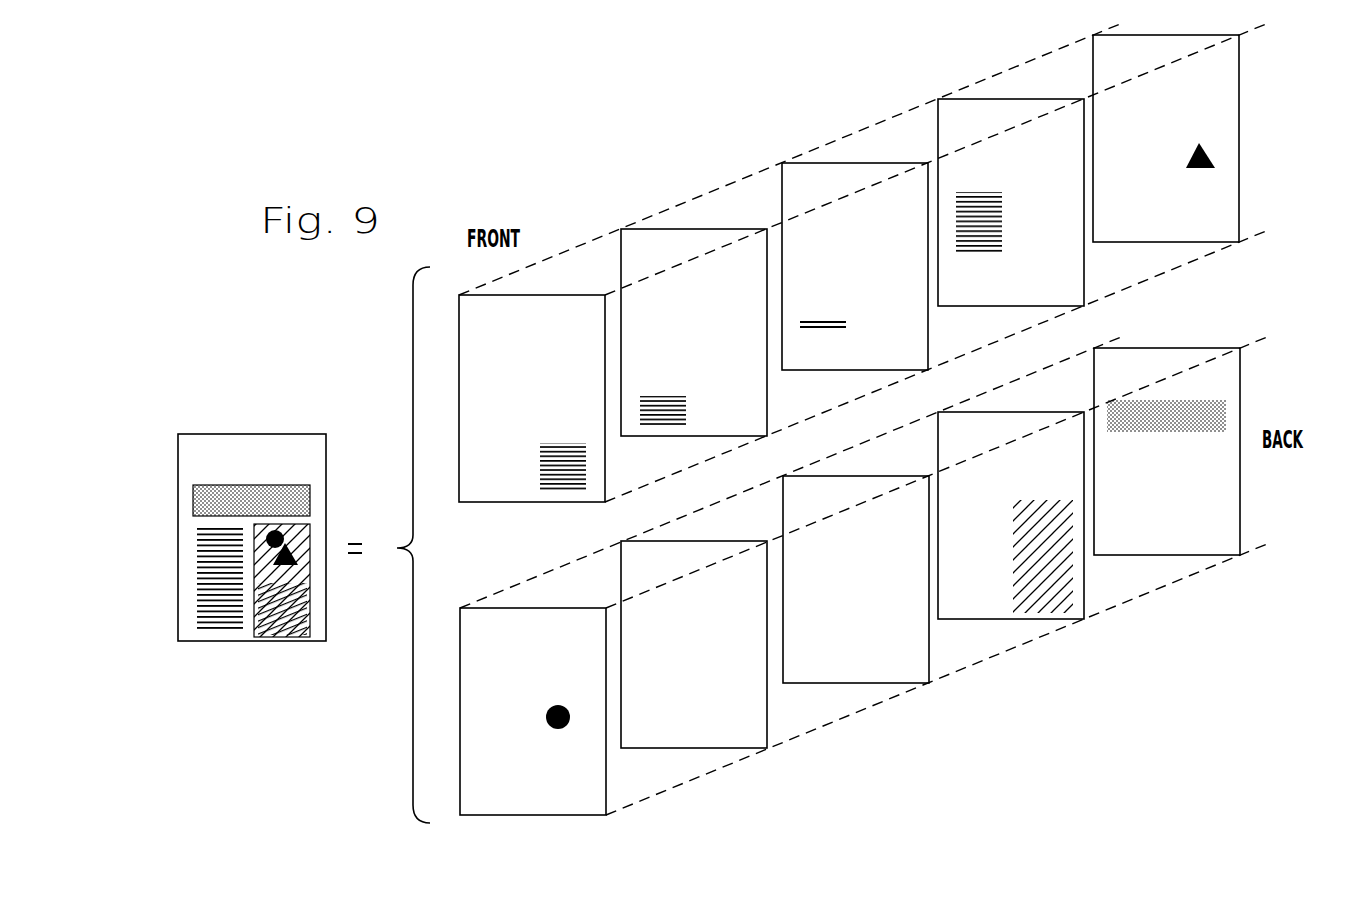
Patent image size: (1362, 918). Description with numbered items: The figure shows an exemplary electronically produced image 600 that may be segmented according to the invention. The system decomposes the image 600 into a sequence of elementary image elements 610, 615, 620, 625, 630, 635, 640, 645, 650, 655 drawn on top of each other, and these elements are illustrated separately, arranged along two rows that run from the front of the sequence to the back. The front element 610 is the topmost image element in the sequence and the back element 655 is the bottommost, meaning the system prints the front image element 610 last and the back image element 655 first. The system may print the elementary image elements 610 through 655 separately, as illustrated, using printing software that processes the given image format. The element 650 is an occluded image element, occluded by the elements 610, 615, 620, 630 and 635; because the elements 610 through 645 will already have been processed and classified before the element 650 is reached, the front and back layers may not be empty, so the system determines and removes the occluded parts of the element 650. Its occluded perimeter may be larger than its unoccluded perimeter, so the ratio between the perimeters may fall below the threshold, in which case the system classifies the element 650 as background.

The image 600 is at (258, 433).
The elementary image element 610 is at (551, 302).
The elementary image element 615 is at (682, 233).
The elementary image element 620 is at (840, 167).
The elementary image element 625 is at (990, 103).
The elementary image element 630 is at (1230, 77).
The elementary image element 635 is at (518, 620).
The elementary image element 640 is at (757, 733).
The elementary image element 645 is at (900, 673).
The occluded image element 650 is at (1073, 590).
The elementary image element 655 is at (1213, 552).